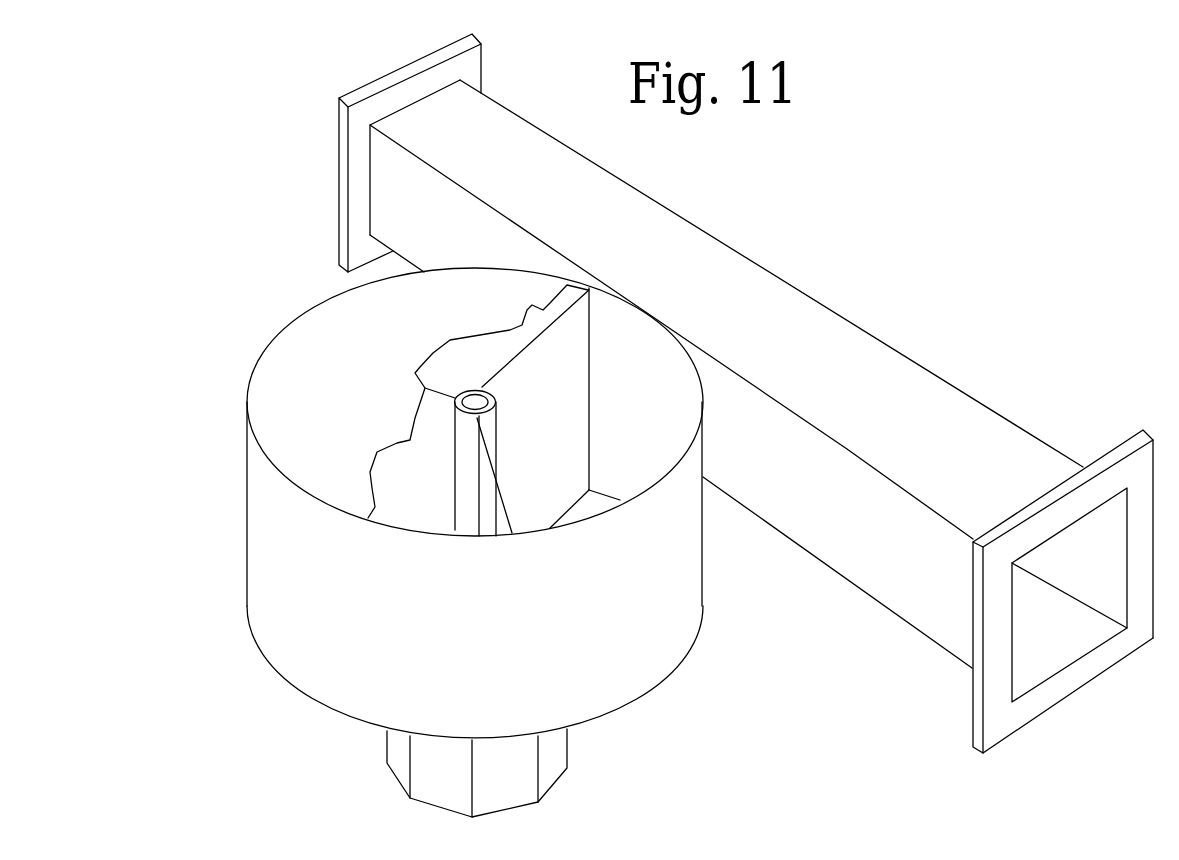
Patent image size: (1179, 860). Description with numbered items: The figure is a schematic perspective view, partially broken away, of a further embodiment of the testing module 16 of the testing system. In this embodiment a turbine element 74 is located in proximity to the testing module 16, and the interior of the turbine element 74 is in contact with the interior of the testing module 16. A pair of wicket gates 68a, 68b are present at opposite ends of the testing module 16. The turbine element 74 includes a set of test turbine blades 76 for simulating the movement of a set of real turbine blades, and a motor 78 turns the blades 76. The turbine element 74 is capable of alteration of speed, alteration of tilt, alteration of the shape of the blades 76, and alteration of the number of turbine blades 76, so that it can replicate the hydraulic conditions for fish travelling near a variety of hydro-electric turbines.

The testing module 16 is at (893, 600).
The wicket gate 68a is at (340, 148).
The wicket gate 68b is at (978, 705).
The turbine element 74 is at (180, 416).
The test turbine blades 76 is at (538, 410).
The motor 78 is at (393, 740).